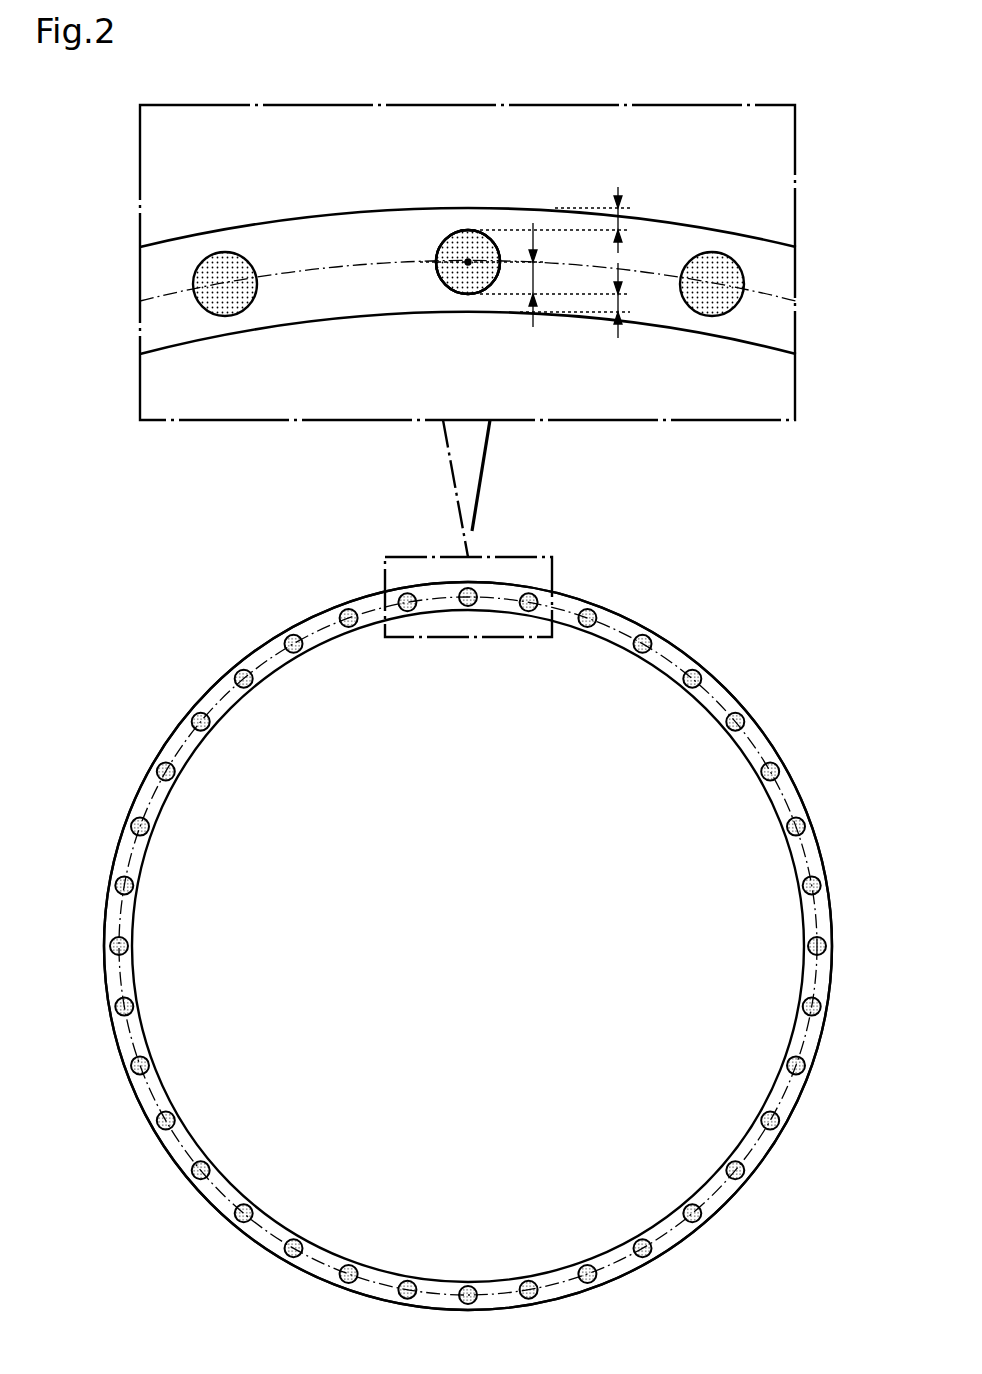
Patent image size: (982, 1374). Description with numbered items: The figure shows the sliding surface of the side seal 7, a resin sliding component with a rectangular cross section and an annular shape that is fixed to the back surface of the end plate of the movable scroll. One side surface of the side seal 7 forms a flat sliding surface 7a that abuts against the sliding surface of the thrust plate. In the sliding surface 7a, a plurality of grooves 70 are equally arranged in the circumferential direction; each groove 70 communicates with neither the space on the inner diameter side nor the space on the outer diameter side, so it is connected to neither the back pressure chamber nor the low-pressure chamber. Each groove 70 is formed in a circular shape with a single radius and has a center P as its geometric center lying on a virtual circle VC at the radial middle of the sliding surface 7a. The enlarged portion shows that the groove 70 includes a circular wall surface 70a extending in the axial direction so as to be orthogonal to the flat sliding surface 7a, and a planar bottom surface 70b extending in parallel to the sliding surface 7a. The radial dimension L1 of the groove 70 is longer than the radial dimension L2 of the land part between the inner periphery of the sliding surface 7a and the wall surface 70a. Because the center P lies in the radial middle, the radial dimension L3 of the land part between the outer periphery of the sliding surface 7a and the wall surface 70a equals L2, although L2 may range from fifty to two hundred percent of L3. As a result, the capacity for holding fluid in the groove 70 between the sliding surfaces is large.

The side seal 7 is at (693, 608).
The sliding surface 7a is at (723, 697).
The groove 70 is at (437, 277).
The wall surface 70a is at (462, 238).
The bottom surface 70b is at (478, 243).
The virtual circle VC is at (363, 266).
The center P is at (466, 263).
The radial dimension of the groove L1 is at (525, 275).
The radial dimension of the land part between the inner periphery and the wall surfa L2 is at (594, 300).
The radial dimension of the land part between the outer periphery and the wall surfa L3 is at (574, 220).